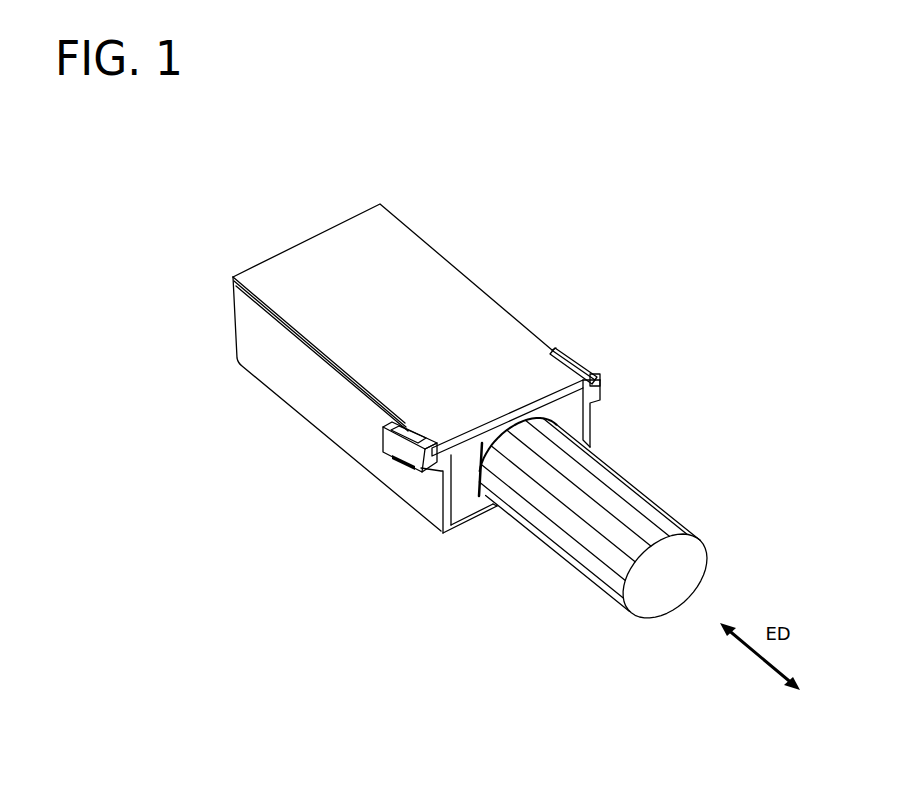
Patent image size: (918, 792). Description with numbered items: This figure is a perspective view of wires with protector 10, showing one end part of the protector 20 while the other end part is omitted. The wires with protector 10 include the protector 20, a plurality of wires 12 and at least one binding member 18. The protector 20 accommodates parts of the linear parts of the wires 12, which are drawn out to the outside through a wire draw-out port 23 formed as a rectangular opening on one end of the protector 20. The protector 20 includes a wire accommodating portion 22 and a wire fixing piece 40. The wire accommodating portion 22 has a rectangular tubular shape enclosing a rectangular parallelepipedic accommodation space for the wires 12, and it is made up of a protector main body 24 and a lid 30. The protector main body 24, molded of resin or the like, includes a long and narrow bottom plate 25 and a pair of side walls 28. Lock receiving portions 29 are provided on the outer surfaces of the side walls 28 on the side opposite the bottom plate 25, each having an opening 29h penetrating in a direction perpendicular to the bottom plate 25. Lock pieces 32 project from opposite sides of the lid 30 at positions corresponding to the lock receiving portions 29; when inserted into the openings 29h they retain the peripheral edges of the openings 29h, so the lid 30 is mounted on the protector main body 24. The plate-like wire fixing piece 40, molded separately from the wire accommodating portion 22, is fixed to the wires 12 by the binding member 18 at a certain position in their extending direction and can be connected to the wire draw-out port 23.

The wires with protector 10 is at (462, 231).
The wires 12 is at (647, 513).
The binding member 18 is at (472, 480).
The protector 20 is at (493, 281).
The wire accommodating portion 22 is at (250, 506).
The wire draw-out port 23 is at (452, 535).
The protector main body 24 is at (320, 433).
The bottom plate 25 is at (463, 505).
The side walls 28 is at (382, 475).
The lock receiving portion 29 is at (384, 436).
The opening 29h is at (416, 425).
The lid 30 is at (320, 355).
The lock piece 32 is at (428, 432).
The wire fixing piece 40 is at (488, 510).